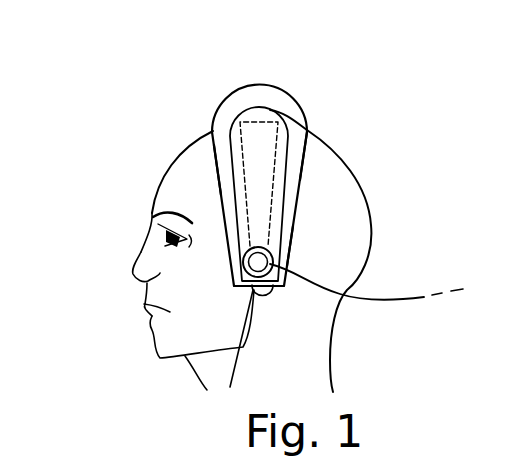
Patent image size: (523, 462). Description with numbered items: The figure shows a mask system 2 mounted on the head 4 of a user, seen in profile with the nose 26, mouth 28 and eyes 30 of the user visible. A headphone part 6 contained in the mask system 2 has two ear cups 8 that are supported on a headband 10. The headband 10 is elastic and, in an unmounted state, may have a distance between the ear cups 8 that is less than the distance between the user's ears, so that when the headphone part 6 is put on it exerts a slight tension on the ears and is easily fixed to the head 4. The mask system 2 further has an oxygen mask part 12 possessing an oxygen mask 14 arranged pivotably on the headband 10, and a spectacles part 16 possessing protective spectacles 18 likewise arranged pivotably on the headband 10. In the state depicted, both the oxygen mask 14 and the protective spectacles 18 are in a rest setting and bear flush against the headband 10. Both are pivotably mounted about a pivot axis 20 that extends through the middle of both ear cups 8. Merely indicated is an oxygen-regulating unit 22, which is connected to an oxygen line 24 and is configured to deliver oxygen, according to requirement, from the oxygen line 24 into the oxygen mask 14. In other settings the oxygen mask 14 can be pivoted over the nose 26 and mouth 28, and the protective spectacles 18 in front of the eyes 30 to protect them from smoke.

The mask system 2 is at (341, 87).
The head 4 is at (358, 198).
The headphone part 6 is at (249, 100).
The ear cups 8 is at (303, 245).
The headband 10 is at (303, 103).
The oxygen mask part 12 is at (302, 172).
The oxygen mask 14 is at (308, 130).
The spectacles part 16 is at (221, 156).
The protective spectacles 18 is at (278, 207).
The pivot axis 20 is at (263, 262).
The oxygen-regulating unit 22 is at (263, 293).
The oxygen line 24 is at (383, 300).
The nose 26 is at (132, 268).
The mouth 28 is at (144, 303).
The eyes 30 is at (149, 219).